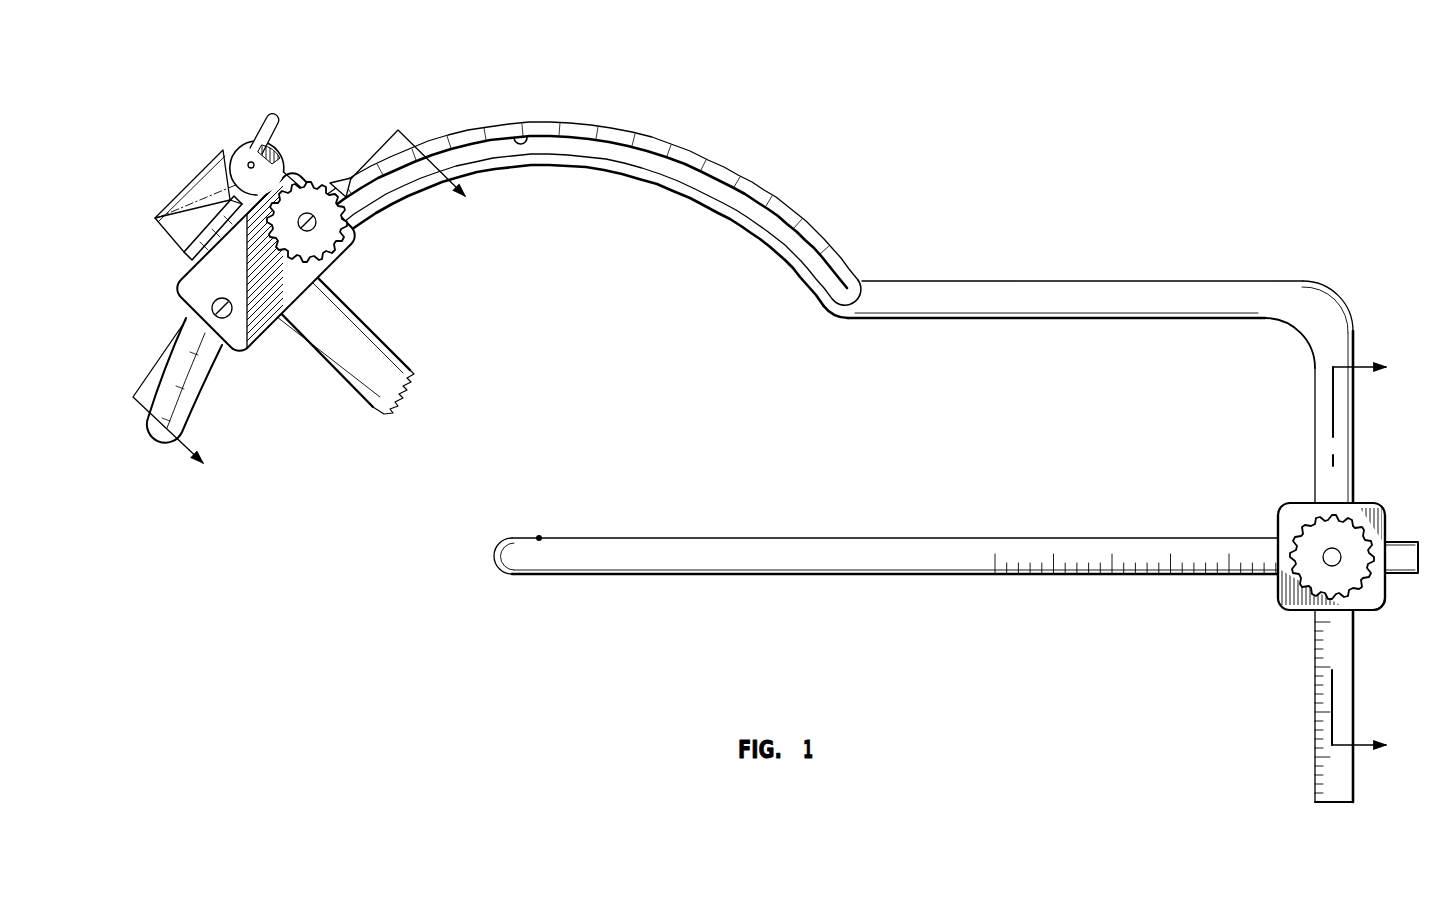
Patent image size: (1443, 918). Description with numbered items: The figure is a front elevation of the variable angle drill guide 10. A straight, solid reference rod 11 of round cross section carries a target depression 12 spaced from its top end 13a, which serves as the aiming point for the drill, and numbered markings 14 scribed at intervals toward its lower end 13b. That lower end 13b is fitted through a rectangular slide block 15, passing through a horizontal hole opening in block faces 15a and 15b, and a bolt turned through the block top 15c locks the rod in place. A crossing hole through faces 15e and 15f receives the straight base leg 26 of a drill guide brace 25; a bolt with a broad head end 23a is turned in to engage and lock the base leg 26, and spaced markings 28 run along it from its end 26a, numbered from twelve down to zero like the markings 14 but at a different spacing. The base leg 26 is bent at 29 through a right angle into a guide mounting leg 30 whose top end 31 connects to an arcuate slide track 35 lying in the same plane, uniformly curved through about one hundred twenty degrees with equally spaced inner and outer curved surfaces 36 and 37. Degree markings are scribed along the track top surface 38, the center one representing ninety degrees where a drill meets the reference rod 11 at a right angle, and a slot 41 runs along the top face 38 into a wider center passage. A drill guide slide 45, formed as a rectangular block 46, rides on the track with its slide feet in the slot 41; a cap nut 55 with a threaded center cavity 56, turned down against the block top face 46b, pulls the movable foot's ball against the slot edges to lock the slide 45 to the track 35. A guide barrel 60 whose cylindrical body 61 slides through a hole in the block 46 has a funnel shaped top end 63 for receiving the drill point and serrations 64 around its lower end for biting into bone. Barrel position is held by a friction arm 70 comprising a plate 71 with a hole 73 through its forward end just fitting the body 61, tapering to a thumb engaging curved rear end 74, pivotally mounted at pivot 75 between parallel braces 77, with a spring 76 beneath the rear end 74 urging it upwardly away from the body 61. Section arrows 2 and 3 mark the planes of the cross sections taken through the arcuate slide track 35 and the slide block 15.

The variable angle drill guide 10 is at (944, 158).
The reference rod 11 is at (810, 545).
The target depression 12 is at (541, 536).
The reference rod top end 13a is at (497, 562).
The reference rod lower end 13b is at (1418, 555).
The markings 14 is at (1098, 576).
The slide block 15 is at (1274, 490).
The block face 15a is at (1385, 590).
The block face 15b is at (1278, 520).
The slide block top 15c is at (1372, 520).
The slide block face 15e is at (1300, 608).
The slide block face 15f is at (1300, 503).
The broad head end 23a is at (1345, 575).
The drill guide brace 25 is at (1194, 268).
The straight base leg 26 is at (1344, 410).
The base leg end 26a is at (1320, 804).
The spaced markings 28 is at (1320, 677).
The right angle bend 29 is at (1324, 300).
The guide mounting leg 30 is at (1058, 296).
The guide mounting leg top end 31 is at (874, 296).
The arcuate slide track 35 is at (704, 128).
The inner curved surface 36 is at (764, 250).
The outer curved surface 37 is at (775, 166).
The top surface 38 is at (640, 140).
The slot 41 is at (526, 132).
The drill guide slide 45 is at (168, 310).
The rectangular block 46 is at (237, 352).
The block top face 46b is at (230, 283).
The cap nut 55 is at (309, 211).
The threaded center cavity 56 is at (346, 178).
The guide barrel 60 is at (181, 185).
The barrel body 61 is at (335, 365).
The funnel shaped top end 63 is at (206, 178).
The serrations 64 is at (404, 392).
The friction arm 70 is at (240, 115).
The plate 71 is at (197, 210).
The hole 73 is at (213, 207).
The thumb engaging curved rear end 74 is at (276, 113).
The pivot 75 is at (248, 161).
The spring 76 is at (282, 140).
The parallel braces 77 is at (298, 176).
The section line 2 is at (308, 313).
The section line 3 is at (1368, 561).